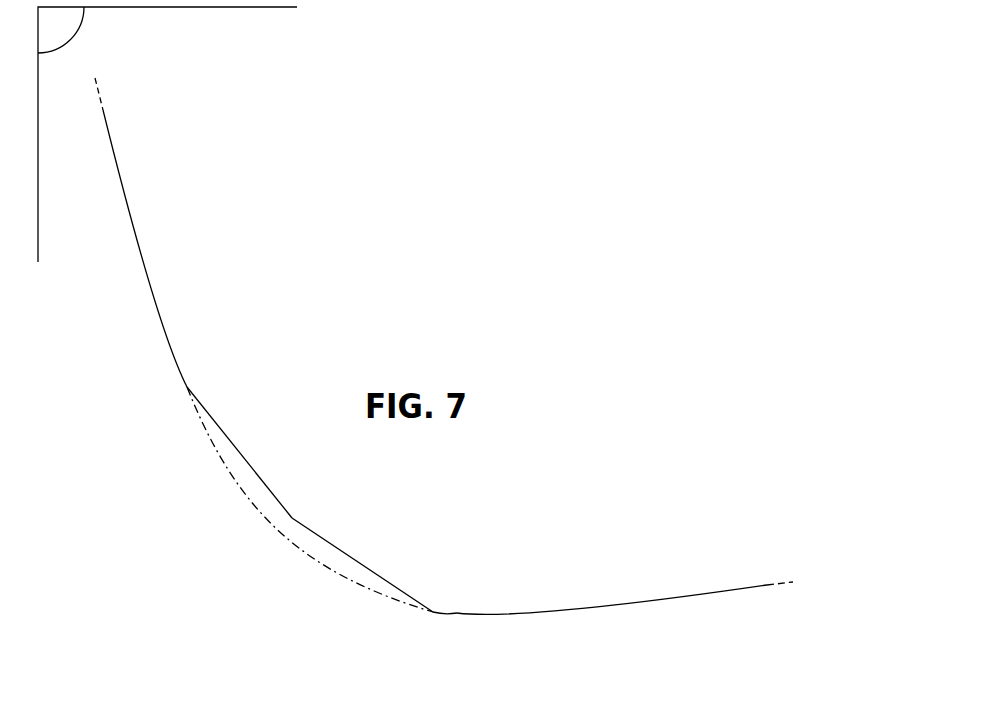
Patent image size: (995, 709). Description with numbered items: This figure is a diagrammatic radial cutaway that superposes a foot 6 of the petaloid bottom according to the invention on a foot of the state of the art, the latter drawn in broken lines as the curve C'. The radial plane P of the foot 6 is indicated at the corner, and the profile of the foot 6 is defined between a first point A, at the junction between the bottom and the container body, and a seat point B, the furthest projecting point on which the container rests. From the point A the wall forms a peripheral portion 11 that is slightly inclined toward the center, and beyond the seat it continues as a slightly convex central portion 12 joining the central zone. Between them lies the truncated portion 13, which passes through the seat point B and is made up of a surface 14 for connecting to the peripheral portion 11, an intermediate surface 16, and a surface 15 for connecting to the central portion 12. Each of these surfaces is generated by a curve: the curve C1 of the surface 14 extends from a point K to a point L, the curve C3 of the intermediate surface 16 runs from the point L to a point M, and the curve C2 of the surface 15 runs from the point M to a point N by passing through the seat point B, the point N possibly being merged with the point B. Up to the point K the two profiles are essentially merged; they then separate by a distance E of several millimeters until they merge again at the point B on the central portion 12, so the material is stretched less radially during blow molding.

The foot 6 is at (421, 377).
The peripheral portion 11 is at (136, 247).
The central portion 12 is at (697, 586).
The truncated portion 13 is at (322, 489).
The surface for connecting to the peripheral portion 14 is at (196, 386).
The surface for connecting to the central portion 15 is at (439, 621).
The intermediate surface 16 is at (361, 557).
The radial plane P is at (167, 134).
The first point A is at (104, 112).
The seat point B is at (454, 612).
The point K is at (182, 382).
The point L is at (217, 419).
The distance E is at (310, 532).
The point M is at (432, 611).
The point N is at (474, 618).
The generatrix curve of the surface for connecting to the peripheral portion C1 is at (200, 407).
The generatrix curve of the surface for connecting to the central portion C2 is at (439, 613).
The generatrix curve of the intermediate surface C3 is at (271, 490).
The circular arc C' is at (310, 499).